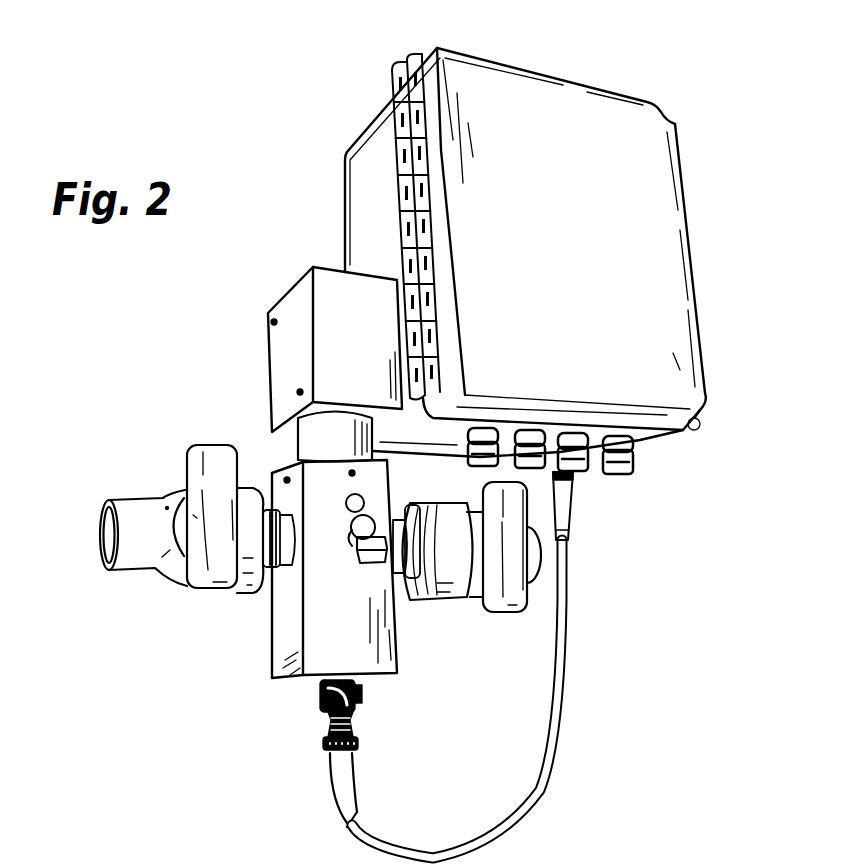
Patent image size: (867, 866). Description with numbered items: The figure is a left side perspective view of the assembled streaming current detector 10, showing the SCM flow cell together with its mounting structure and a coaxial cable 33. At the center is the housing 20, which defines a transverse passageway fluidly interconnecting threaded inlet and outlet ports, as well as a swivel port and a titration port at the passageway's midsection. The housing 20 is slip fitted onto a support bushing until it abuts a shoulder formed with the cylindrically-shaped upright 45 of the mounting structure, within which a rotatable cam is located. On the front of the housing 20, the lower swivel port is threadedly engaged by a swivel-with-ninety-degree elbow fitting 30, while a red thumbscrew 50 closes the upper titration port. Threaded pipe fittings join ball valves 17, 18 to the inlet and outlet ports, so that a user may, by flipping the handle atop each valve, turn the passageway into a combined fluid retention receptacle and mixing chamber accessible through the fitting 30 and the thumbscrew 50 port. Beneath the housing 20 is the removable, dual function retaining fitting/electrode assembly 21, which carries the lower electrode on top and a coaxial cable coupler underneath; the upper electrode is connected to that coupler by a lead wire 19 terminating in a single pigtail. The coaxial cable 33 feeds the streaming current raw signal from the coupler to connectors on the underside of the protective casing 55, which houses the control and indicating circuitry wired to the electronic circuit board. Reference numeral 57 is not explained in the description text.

The streaming current detector 10 is at (662, 677).
The ball valve 17 is at (473, 625).
The ball valve 18 is at (165, 613).
The lead wire 19 is at (318, 684).
The housing 20 is at (325, 612).
The retaining fitting/electrode assembly 21 is at (360, 697).
The swivel-with-90 degree elbow fitting 30 is at (362, 550).
The coaxial cable 33 is at (340, 772).
The upright 45 is at (323, 437).
The thumbscrew 50 is at (358, 500).
The protective casing 55 is at (690, 476).
The junction box 57 is at (337, 308).